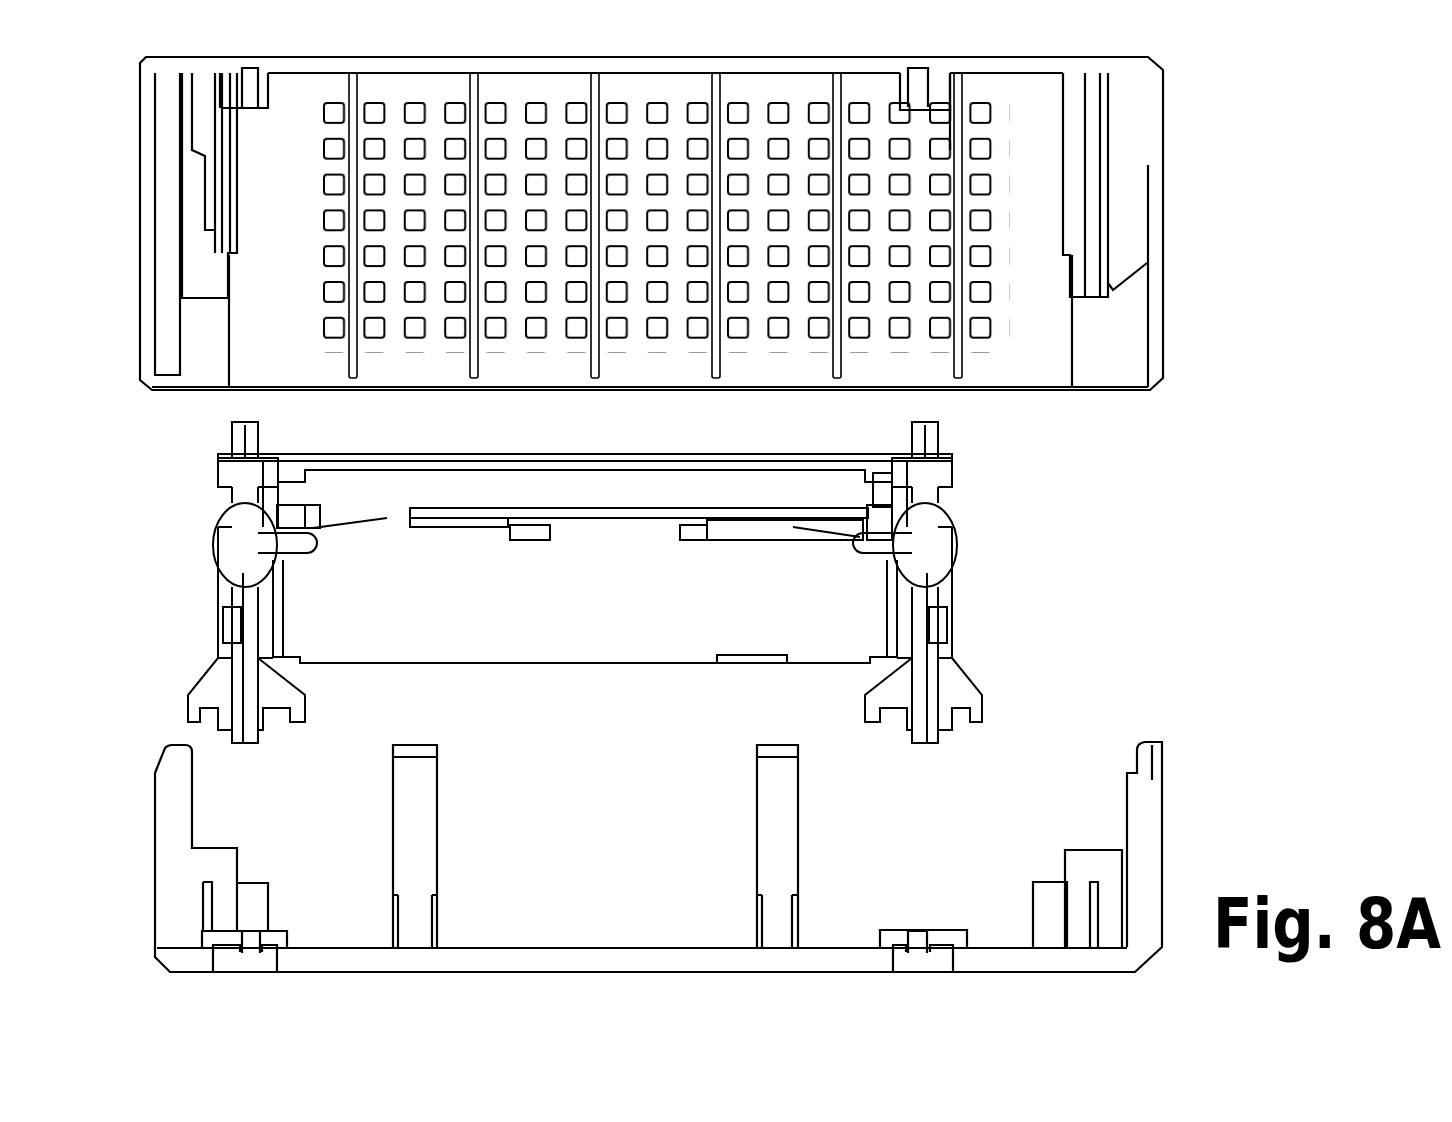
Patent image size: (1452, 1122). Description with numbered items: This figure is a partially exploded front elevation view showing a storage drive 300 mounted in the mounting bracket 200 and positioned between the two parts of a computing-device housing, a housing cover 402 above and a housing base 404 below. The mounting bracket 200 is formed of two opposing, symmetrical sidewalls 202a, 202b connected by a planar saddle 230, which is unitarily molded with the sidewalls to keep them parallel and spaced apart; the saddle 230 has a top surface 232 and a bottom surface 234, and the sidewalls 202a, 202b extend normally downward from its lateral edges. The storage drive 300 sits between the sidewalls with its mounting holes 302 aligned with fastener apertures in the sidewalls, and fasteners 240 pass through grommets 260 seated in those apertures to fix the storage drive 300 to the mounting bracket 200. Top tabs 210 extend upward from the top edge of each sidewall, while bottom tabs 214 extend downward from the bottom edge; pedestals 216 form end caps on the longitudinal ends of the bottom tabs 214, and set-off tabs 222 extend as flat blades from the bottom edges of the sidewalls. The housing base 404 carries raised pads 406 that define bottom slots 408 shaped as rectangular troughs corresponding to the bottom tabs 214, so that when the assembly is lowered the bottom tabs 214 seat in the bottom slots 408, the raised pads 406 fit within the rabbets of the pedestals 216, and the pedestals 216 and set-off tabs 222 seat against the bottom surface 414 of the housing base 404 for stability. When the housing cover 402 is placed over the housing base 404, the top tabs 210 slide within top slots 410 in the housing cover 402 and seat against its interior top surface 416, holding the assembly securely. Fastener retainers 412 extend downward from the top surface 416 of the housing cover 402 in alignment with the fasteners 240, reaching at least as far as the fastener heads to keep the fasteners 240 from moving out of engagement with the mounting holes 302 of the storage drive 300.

The mounting bracket 200 is at (608, 599).
The sidewall 202a is at (212, 583).
The sidewall 202b is at (953, 617).
The top tab 210 is at (232, 437).
The bottom tab 214 is at (250, 745).
The pedestal 216 is at (212, 685).
The set-off tab 222 is at (273, 728).
The saddle 230 is at (585, 562).
The top surface 232 is at (566, 449).
The bottom surface 234 is at (440, 474).
The fastener 240 is at (214, 543).
The grommet 260 is at (242, 520).
The storage drive 300 is at (567, 665).
The mounting hole 302 is at (330, 544).
The housing cover 402 is at (706, 223).
The housing base 404 is at (716, 857).
The raised pad 406 is at (286, 928).
The bottom slot 408 is at (254, 922).
The top slot 410 is at (249, 116).
The fastener retainer 412 is at (212, 201).
The bottom surface 414 is at (654, 947).
The top surface 416 is at (296, 86).